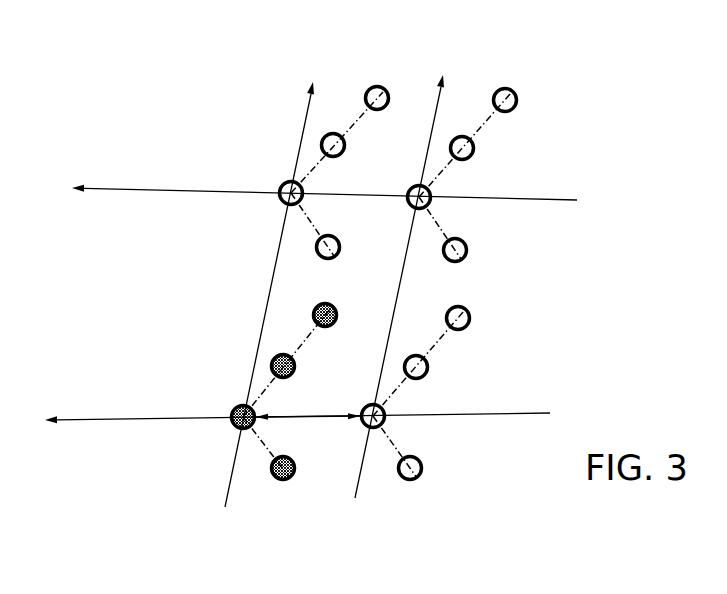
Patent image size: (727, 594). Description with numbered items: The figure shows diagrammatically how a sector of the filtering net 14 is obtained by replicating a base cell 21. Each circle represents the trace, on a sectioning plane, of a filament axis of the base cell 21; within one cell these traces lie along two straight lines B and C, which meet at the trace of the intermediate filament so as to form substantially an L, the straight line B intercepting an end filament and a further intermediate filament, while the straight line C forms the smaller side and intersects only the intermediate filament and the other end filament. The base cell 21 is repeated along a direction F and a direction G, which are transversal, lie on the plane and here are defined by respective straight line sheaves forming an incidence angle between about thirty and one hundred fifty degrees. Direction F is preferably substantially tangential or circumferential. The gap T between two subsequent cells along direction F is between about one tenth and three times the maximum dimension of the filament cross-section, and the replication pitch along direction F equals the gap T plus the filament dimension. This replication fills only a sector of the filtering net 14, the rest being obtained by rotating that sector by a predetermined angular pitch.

The filtering net 14 is at (374, 56).
The base cell 21 is at (294, 494).
The direction F is at (543, 200).
The direction G is at (442, 112).
The straight line B is at (310, 335).
The straight line C is at (266, 450).
The gap T is at (308, 407).